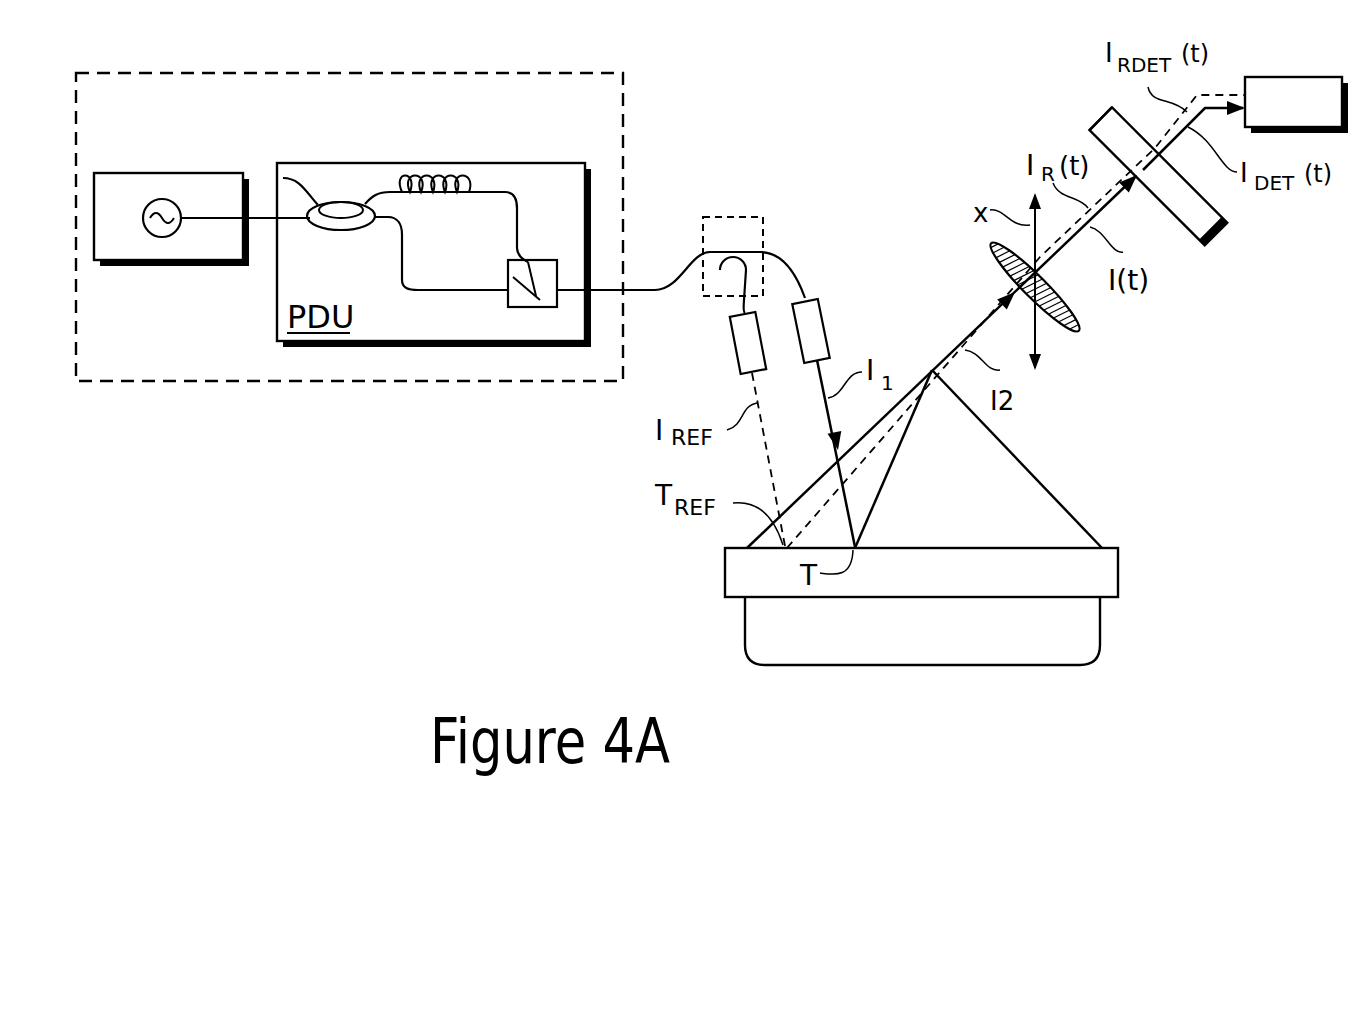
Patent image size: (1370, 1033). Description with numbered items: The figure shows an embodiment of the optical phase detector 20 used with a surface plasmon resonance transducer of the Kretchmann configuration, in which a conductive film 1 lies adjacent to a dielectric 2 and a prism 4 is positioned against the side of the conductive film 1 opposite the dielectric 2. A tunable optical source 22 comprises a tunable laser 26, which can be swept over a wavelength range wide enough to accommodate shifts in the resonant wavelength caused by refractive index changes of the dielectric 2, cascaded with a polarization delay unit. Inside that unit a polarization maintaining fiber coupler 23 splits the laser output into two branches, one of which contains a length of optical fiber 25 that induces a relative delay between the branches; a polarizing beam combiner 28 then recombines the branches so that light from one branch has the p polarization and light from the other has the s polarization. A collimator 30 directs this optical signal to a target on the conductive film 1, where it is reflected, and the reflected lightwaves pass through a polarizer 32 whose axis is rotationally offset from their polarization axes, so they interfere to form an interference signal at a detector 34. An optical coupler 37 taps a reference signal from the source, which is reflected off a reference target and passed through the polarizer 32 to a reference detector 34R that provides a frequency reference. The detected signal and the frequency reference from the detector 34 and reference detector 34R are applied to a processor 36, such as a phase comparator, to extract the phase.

The conductive film 1 is at (1095, 585).
The dielectric 2 is at (1068, 650).
The prism 4 is at (1046, 535).
The optical phase detector 20 is at (418, 556).
The tunable optical source 22 is at (130, 365).
The polarization maintaining fiber coupler 23 is at (338, 207).
The length of optical fiber 25 is at (437, 180).
The tunable laser 26 is at (163, 199).
The polarizing beam combiner 28 is at (545, 260).
The collimator 30 is at (828, 322).
The polarizer 32 is at (1080, 333).
The detector 34 is at (1220, 237).
The reference detector 34R is at (1103, 118).
The processor 36 is at (1310, 117).
The optical coupler 37 is at (745, 215).